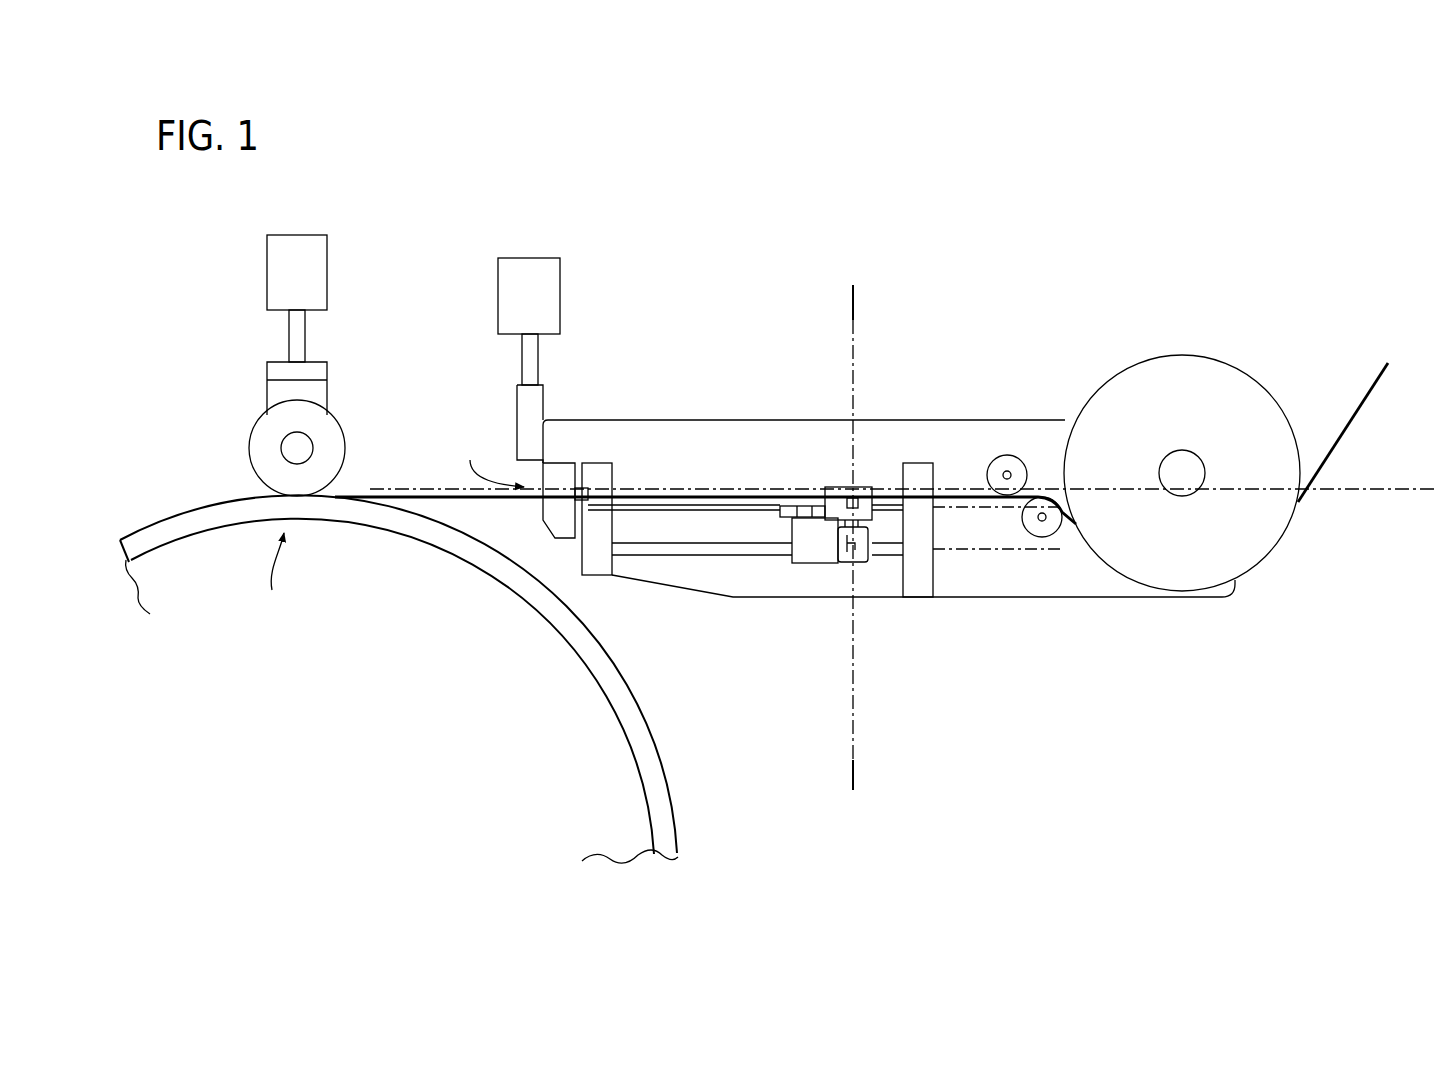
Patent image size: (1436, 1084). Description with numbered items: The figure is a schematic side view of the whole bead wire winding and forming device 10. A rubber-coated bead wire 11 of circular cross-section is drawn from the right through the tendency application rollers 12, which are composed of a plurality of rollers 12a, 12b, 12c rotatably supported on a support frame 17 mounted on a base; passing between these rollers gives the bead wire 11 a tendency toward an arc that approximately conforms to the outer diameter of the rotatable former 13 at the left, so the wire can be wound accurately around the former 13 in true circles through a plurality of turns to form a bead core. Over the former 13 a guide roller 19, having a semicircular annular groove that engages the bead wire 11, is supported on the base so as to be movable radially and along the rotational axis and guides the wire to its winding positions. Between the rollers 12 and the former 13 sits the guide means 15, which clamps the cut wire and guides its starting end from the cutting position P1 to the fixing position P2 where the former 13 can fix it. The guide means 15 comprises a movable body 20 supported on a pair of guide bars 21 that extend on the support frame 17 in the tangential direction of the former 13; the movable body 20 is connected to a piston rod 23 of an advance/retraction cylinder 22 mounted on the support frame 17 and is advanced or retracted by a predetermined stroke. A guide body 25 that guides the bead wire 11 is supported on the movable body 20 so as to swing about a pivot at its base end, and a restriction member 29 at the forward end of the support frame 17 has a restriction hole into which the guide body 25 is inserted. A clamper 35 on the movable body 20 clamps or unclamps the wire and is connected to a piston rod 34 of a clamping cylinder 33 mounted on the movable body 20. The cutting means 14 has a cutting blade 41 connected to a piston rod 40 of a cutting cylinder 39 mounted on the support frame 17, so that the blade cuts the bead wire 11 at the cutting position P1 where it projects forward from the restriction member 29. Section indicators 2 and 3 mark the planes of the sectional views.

The bead wire winding and forming device 10 is at (740, 620).
The bead wire 11 is at (1360, 405).
The tendency application rollers 12 is at (1114, 469).
The roller 12a is at (1210, 360).
The roller 12b is at (1048, 540).
The roller 12c is at (990, 456).
The former 13 is at (178, 515).
The cutting means 14 is at (490, 433).
The guide means 15 is at (821, 528).
The support frame 17 is at (600, 425).
The guide roller 19 is at (253, 452).
The movable body 20 is at (800, 565).
The guide bars 21 is at (670, 548).
The advance/retraction cylinder 22 is at (1010, 548).
The piston rod 23 is at (848, 563).
The guide body 25 is at (664, 505).
The restriction member 29 is at (552, 530).
The clamping cylinder 33 is at (868, 565).
The piston rod 34 is at (832, 498).
The clamper 35 is at (856, 487).
The cutting cylinder 39 is at (517, 258).
The piston rod 40 is at (520, 356).
The cutting blade 41 is at (517, 420).
The cutting position P1 is at (490, 460).
The fixing position P2 is at (274, 576).
The section line 2 is at (407, 490).
The section line 3 is at (858, 302).